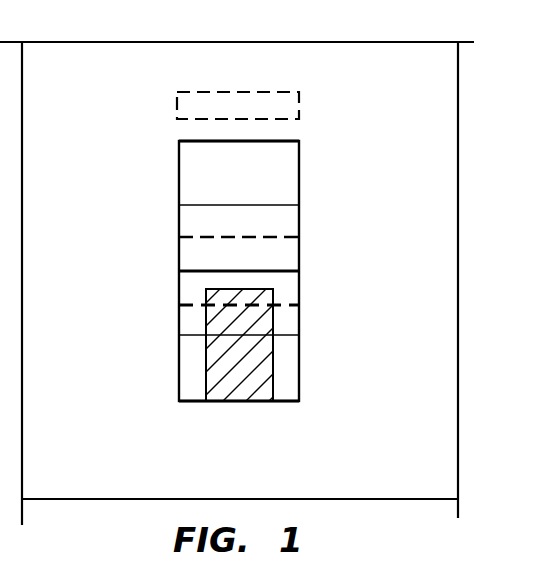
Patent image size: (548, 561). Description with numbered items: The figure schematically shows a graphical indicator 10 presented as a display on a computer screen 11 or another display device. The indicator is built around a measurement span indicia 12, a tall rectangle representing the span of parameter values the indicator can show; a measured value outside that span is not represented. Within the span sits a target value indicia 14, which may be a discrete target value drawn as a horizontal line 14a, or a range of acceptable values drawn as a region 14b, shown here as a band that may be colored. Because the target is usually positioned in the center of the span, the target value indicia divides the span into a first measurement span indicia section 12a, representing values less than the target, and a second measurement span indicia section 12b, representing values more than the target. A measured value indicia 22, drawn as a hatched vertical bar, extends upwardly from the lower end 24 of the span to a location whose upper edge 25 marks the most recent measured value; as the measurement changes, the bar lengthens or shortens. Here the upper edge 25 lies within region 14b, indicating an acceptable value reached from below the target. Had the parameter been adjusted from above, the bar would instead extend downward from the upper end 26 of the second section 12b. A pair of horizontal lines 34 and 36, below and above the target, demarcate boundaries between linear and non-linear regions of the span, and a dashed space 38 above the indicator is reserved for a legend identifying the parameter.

The graphical indicator 10 is at (372, 181).
The computer screen 11 is at (359, 41).
The measurement span indicia 12 is at (308, 218).
The first measurement span indicia section 12a is at (170, 350).
The second measurement span indicia section 12b is at (172, 176).
The target value indicia 14 is at (309, 286).
The horizontal line 14a is at (188, 272).
The region 14b is at (186, 247).
The measured value indicia 22 is at (263, 363).
The lower end 24 is at (286, 402).
The upper edge 25 is at (258, 289).
The upper end 26 is at (285, 141).
The horizontal line 34 is at (195, 338).
The horizontal line 36 is at (260, 205).
The space 38 is at (211, 90).